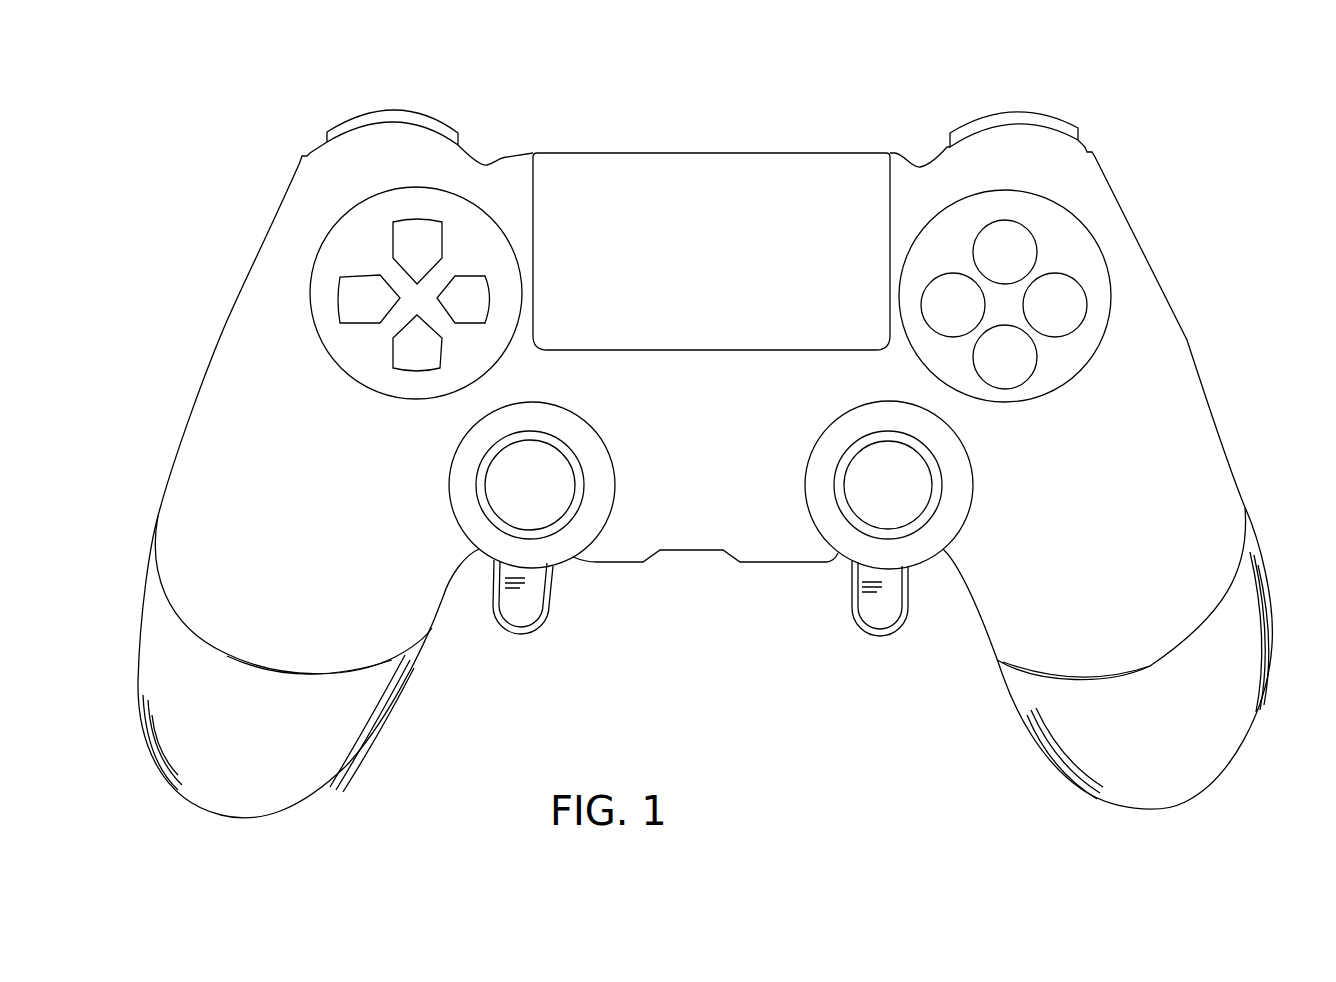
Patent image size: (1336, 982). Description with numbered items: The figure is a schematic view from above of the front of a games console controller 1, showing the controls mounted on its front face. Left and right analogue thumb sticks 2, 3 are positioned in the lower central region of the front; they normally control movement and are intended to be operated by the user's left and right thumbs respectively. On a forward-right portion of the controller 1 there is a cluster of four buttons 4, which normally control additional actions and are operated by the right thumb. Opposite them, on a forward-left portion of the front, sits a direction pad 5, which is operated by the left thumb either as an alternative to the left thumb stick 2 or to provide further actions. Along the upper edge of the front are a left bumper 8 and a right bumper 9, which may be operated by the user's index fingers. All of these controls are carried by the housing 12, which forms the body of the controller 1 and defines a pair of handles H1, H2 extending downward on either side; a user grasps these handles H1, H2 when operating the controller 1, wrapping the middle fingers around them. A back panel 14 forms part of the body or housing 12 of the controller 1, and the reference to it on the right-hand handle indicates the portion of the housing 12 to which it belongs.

The controller 1 is at (192, 100).
The left analogue thumb stick 2 is at (539, 495).
The right analogue thumb stick 3 is at (894, 502).
The buttons 4 is at (1070, 257).
The direction pad 5 is at (362, 250).
The left bumper 8 is at (370, 118).
The right bumper 9 is at (1048, 120).
The housing 12 is at (721, 467).
The back panel 14 is at (1172, 741).
The handle H1 is at (354, 637).
The handle H2 is at (1048, 697).